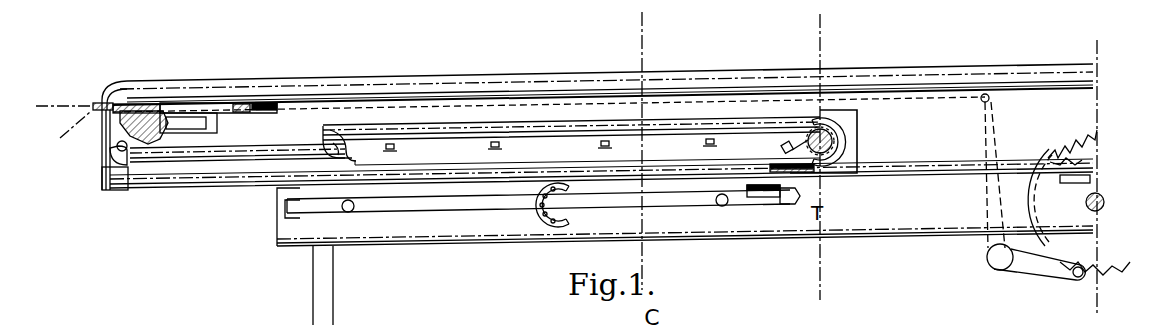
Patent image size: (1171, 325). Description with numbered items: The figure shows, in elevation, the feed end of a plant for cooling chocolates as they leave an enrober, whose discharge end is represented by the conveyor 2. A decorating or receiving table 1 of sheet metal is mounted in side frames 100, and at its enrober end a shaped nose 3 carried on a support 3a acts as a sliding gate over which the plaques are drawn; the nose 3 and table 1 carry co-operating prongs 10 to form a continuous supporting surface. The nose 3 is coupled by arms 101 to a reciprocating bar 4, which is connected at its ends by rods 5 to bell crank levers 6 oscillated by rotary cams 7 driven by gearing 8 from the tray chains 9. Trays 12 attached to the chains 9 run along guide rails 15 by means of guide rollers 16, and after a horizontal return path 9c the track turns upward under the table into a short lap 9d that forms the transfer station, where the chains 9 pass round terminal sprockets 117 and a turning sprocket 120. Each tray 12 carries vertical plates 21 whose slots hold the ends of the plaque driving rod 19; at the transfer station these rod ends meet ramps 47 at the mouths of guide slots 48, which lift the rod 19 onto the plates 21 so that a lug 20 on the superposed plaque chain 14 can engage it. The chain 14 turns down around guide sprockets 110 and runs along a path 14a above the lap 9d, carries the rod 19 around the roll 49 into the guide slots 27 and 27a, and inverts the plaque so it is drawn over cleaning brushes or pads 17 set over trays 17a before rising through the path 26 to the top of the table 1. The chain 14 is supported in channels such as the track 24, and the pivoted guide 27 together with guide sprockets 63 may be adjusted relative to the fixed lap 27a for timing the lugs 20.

The decorating or receiving table 1 is at (453, 95).
The conveyor 2 is at (90, 102).
The nose 3 is at (100, 114).
The support 3a is at (152, 144).
The reciprocating bar 4 is at (242, 103).
The rods 5 is at (268, 102).
The bell crank levers 6 is at (1012, 270).
The rotary cams 7 is at (1090, 272).
The gearing 8 is at (1063, 142).
The tray chains 9 is at (1064, 184).
The horizontal path 9c is at (906, 236).
The horizontal lap 9d is at (928, 180).
The prongs 10 is at (158, 102).
The trays 12 is at (455, 210).
The superposed chain 14 is at (690, 82).
The path 14a is at (251, 174).
The guide rails 15 is at (793, 94).
The guide rollers 16 is at (350, 212).
The cleaning brushes or pads 17 is at (700, 146).
The trays 17a is at (458, 162).
The driving rod 19 is at (785, 205).
The lugs 20 is at (782, 147).
The vertical plates 21 is at (762, 197).
The supporting and guiding track or channel 24 is at (536, 90).
The path 26 is at (108, 152).
The guide slot 27 is at (581, 125).
The fixed lap 27a is at (270, 158).
The ramps 47 is at (803, 172).
The guide slots 48 is at (843, 143).
The roll 49 is at (838, 134).
The guide sprockets 63 is at (340, 136).
The side frames 100 is at (413, 113).
The arms 101 is at (205, 127).
The guide sprockets 110 is at (128, 96).
The terminal sprockets 117 is at (540, 232).
The guiding or turning sprocket 120 is at (1050, 155).